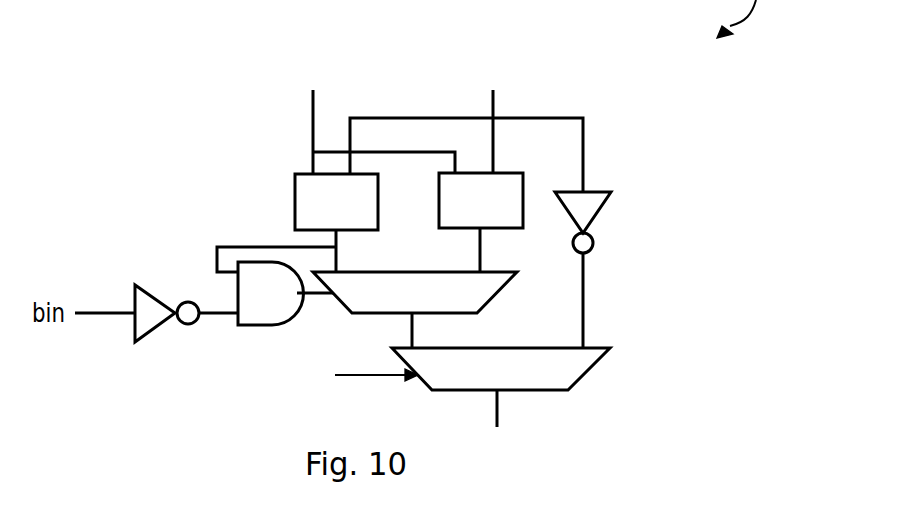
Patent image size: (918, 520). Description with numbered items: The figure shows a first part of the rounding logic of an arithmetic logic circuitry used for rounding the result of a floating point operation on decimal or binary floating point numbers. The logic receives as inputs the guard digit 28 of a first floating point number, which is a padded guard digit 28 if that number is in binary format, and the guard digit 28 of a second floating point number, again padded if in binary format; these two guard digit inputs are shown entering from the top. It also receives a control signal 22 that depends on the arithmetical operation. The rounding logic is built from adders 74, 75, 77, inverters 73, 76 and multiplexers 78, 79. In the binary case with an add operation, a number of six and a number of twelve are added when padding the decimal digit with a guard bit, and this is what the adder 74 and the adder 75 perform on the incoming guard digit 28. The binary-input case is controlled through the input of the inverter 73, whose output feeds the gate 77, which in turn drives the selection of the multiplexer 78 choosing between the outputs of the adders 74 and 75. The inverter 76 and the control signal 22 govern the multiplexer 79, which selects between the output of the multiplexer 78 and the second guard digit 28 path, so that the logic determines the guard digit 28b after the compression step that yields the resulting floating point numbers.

The control signal 22 is at (350, 374).
The guard digit 28 is at (308, 88).
The guard digit 28b is at (492, 430).
The inverter 73 is at (135, 288).
The adder 74 is at (295, 200).
The adder 75 is at (439, 228).
The inverter 76 is at (600, 213).
The adder 77 is at (267, 327).
The multiplexer 78 is at (503, 292).
The multiplexer 79 is at (590, 370).